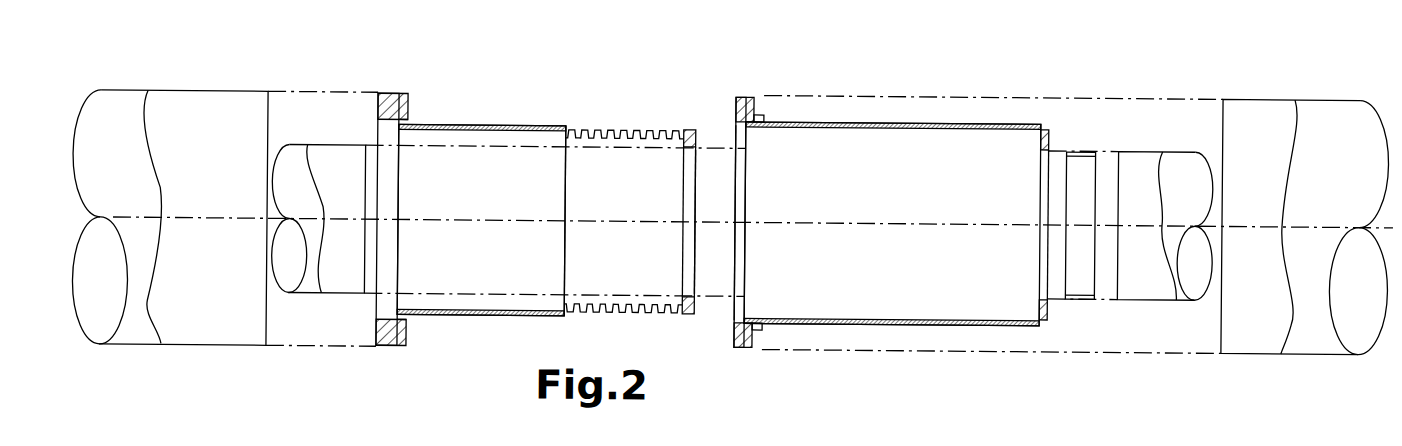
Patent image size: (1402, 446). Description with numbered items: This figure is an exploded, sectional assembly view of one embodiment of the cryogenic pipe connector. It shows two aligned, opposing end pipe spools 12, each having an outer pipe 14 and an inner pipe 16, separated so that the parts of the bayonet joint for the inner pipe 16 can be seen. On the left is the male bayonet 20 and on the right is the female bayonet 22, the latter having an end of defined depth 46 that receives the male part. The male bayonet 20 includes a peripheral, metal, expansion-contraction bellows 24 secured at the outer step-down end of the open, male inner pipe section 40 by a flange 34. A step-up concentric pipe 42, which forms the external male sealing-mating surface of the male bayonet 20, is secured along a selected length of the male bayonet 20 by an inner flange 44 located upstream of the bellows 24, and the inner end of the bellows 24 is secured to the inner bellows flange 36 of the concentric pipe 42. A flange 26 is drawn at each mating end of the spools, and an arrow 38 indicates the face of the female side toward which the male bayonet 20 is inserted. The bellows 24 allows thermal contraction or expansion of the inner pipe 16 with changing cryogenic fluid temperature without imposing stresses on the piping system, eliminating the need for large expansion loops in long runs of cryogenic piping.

The end pipe spool 12 is at (307, 349).
The outer pipe 14 is at (301, 94).
The inner pipe 16 is at (337, 148).
The male bayonet 20 is at (682, 148).
The female bayonet 22 is at (856, 124).
The expansion-contraction bellows 24 is at (605, 130).
The flange 26 is at (393, 96).
The flange 34 is at (693, 130).
The inner bellows flange 36 is at (566, 130).
The flange face 38 is at (729, 292).
The male inner pipe section 40 is at (680, 200).
The concentric pipe 42 is at (460, 126).
The inner flange 44 is at (407, 119).
The end of defined depth 46 is at (1048, 140).